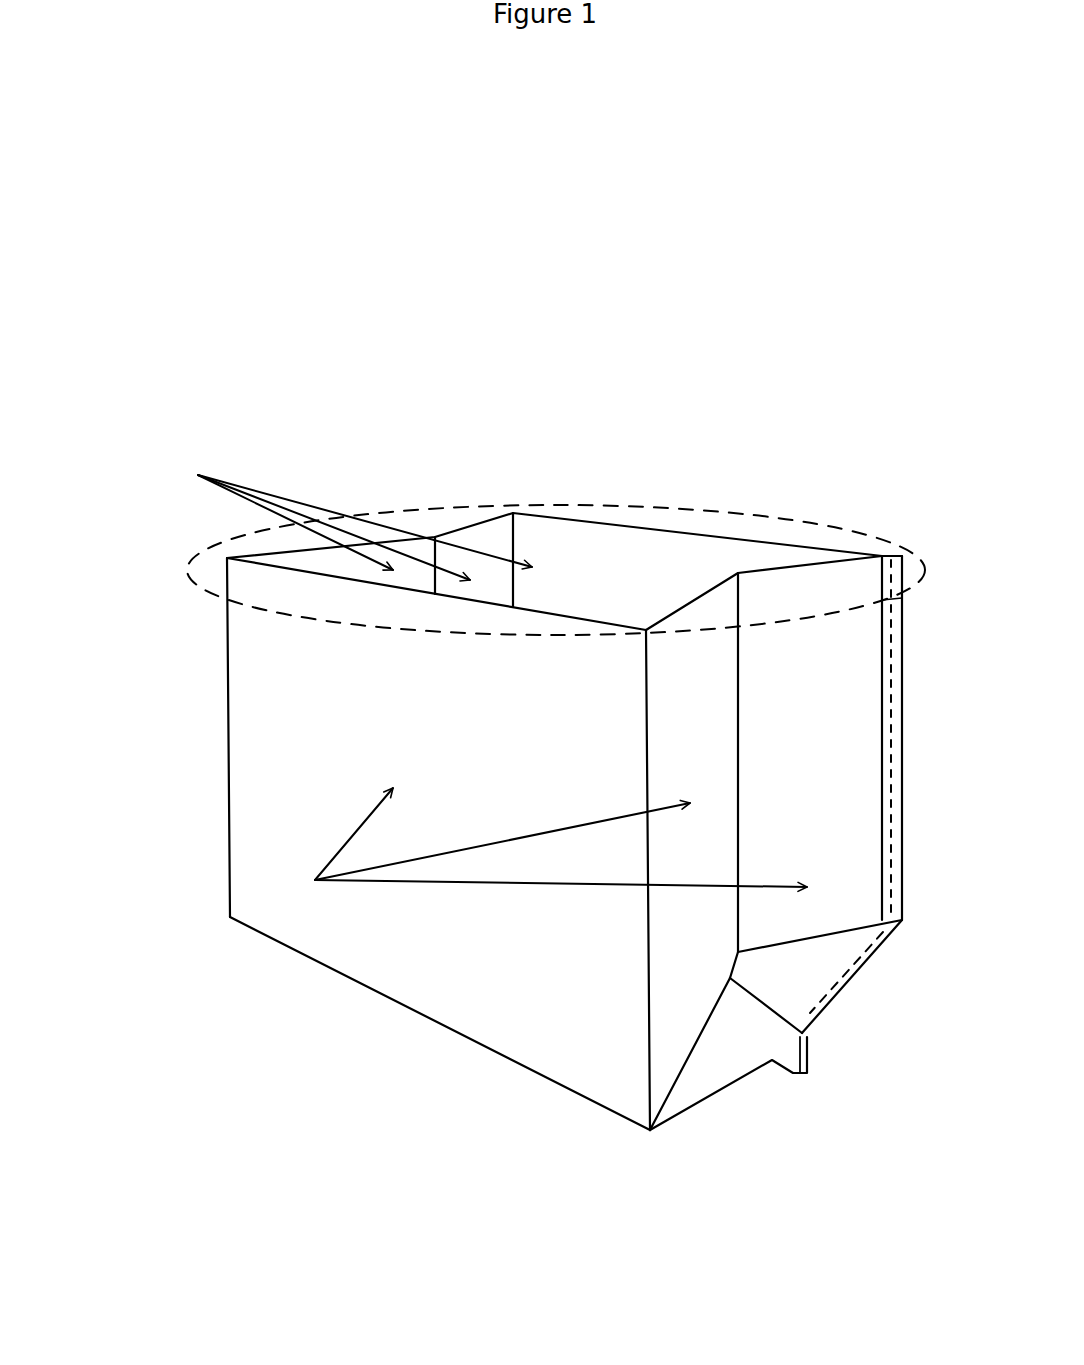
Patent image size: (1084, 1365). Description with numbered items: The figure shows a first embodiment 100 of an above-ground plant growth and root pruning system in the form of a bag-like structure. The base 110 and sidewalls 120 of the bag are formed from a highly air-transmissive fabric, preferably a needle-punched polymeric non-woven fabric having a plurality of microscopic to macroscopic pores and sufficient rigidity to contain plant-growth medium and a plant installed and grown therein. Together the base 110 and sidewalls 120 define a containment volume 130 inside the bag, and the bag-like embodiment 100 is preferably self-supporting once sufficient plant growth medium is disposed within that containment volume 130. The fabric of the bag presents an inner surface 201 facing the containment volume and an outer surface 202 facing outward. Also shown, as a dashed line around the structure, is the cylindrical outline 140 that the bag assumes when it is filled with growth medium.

The first embodiment 100 is at (410, 1047).
The base 110 is at (720, 1097).
The sidewalls 120 is at (222, 993).
The containment volume 130 is at (562, 575).
The cylindrical outline 140 is at (823, 523).
The inner surface 201 is at (693, 577).
The outer surface 202 is at (270, 707).